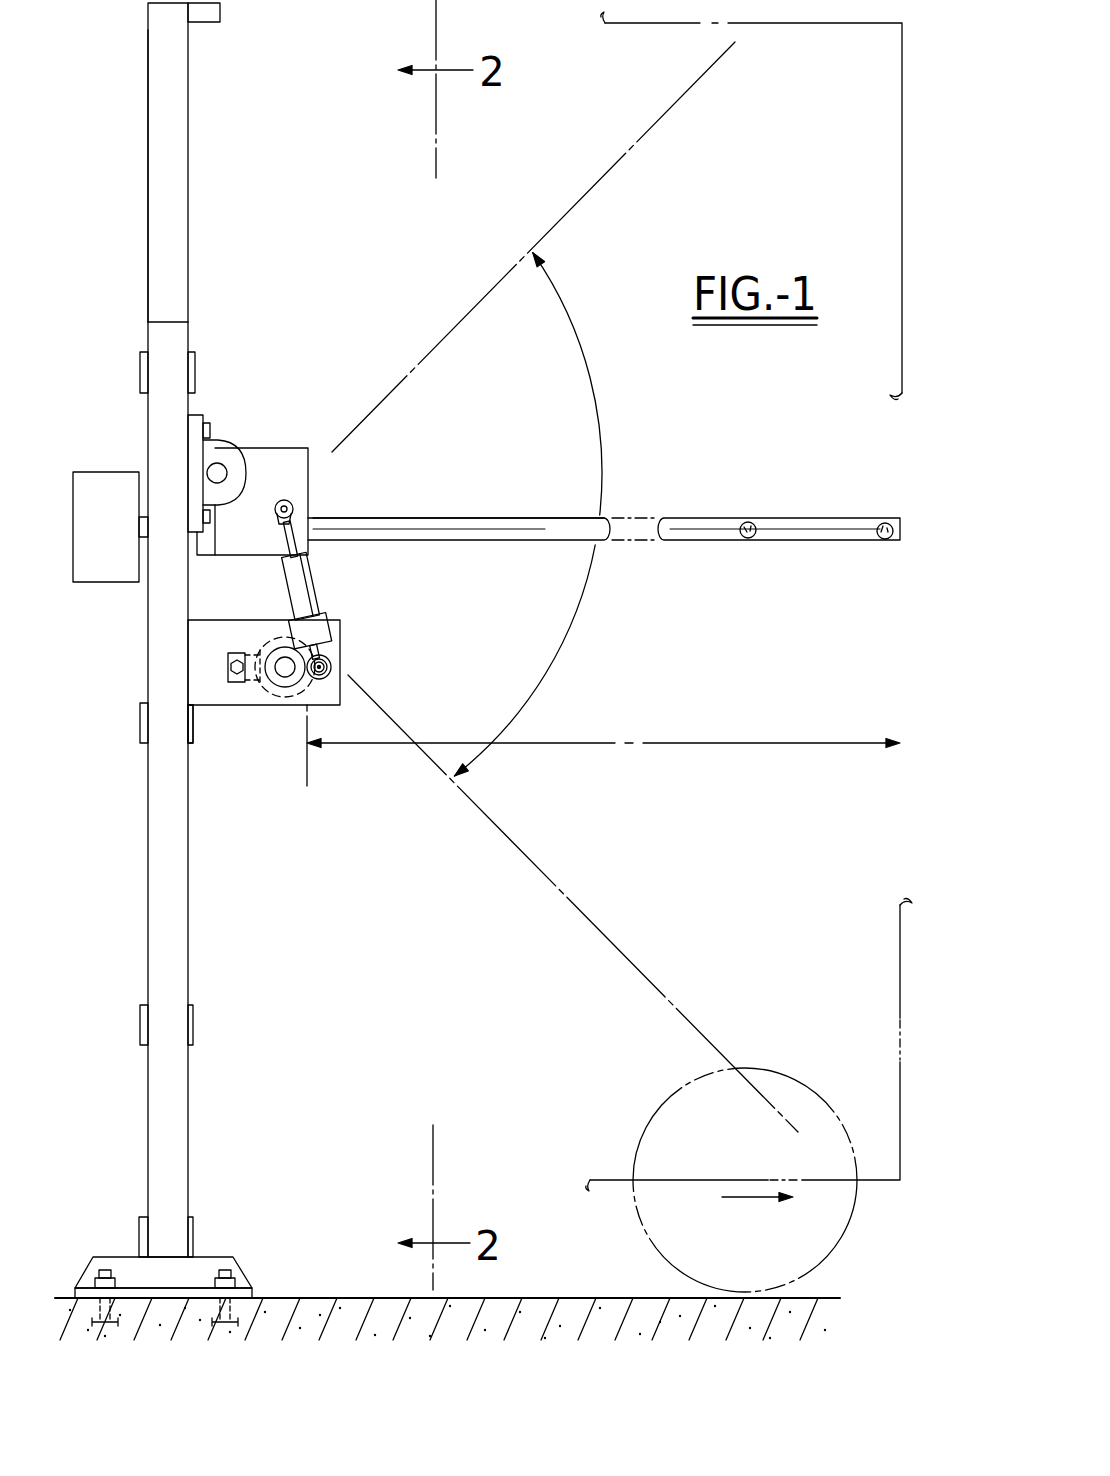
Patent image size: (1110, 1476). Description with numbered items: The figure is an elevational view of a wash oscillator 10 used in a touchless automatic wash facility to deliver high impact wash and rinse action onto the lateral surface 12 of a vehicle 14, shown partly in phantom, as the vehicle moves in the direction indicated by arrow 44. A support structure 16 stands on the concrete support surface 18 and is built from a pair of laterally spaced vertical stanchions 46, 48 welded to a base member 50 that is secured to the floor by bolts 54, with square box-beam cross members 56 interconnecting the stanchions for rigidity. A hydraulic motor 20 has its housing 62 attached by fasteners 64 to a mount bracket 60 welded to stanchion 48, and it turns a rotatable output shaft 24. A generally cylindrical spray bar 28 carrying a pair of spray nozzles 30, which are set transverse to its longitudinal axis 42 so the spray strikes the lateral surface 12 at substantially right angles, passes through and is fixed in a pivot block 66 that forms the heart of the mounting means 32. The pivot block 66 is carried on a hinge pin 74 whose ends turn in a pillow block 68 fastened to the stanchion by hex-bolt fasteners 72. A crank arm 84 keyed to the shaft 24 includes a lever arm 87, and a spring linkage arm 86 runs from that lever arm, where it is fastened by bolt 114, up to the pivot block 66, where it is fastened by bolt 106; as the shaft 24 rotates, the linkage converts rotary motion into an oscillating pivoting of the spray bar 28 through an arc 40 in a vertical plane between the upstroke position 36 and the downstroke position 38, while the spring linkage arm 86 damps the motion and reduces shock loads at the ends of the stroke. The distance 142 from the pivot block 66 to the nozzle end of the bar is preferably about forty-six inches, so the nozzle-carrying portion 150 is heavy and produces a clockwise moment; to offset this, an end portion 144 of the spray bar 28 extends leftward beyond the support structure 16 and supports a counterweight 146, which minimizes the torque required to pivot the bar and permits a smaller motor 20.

The wash oscillator 10 is at (307, 342).
The lateral surface 12 is at (810, 124).
The vehicle 14 is at (666, 1178).
The support structure 16 is at (200, 60).
The support surface 18 is at (303, 1297).
The motor 20 is at (273, 637).
The shaft 24 is at (285, 677).
The spray bar 28 is at (815, 520).
The spray nozzles 30 is at (752, 542).
The mounting means 32 is at (248, 437).
The upstroke position 36 is at (598, 183).
The downstroke position 38 is at (603, 928).
The arc 40 is at (598, 405).
The longitudinal axis 42 is at (529, 527).
The arrow 44 is at (762, 1198).
The stanchion 46 is at (160, 324).
The stanchion 48 is at (148, 165).
The base member 50 is at (122, 1257).
The bolts 54 is at (105, 1275).
The cross members 56 is at (140, 370).
The mount bracket 60 is at (193, 668).
The housing 62 is at (228, 660).
The fasteners 64 is at (238, 675).
The pivot block 66 is at (308, 470).
The first pillow block 68 is at (214, 447).
The fasteners 72 is at (210, 443).
The hinge pin 74 is at (212, 472).
The crank arm 84 is at (292, 685).
The spring linkage arm 86 is at (324, 606).
The lever arm 87 is at (332, 665).
The bolt 106 is at (293, 507).
The bolt 114 is at (318, 678).
The distance 142 is at (697, 740).
The end portion 144 is at (145, 540).
The counterweight 146 is at (113, 470).
The portion of spray bar 150 is at (443, 518).